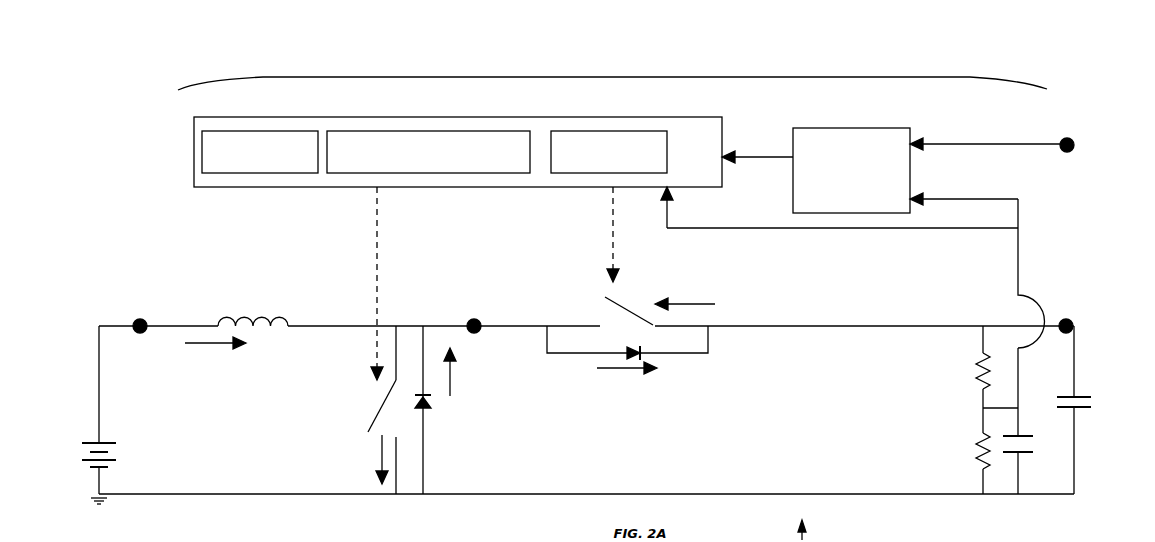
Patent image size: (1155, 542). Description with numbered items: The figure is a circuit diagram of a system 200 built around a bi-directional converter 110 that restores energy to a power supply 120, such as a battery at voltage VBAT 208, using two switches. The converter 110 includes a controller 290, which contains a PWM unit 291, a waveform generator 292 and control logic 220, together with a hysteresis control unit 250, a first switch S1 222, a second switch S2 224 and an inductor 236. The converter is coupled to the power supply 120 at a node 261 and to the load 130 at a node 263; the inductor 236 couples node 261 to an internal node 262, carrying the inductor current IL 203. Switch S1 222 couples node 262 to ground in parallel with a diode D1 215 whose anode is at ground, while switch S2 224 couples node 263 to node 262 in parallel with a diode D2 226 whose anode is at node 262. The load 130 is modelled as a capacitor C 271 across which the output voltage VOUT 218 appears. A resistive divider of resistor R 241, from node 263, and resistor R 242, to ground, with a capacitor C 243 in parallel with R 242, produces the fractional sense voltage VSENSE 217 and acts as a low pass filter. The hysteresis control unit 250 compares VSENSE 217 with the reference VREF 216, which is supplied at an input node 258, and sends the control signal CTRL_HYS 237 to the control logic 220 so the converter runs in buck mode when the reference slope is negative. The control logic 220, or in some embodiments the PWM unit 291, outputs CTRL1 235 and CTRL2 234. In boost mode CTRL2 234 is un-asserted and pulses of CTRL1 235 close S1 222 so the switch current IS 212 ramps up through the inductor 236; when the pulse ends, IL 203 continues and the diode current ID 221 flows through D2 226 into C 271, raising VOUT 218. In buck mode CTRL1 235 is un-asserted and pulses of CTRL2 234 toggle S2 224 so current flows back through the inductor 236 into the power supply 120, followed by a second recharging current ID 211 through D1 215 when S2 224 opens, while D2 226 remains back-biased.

The system 200 is at (158, 56).
The bi-directional converter 110 is at (613, 77).
The controller 290 is at (300, 216).
The pulse width modulator (PWM) unit 291 is at (260, 152).
The waveform generator 292 is at (428, 152).
The control logic 220 is at (609, 152).
The CTRL_HYS control signal 237 is at (757, 140).
The hysteresis control unit 250 is at (851, 170).
The VREF reference signal 216 is at (988, 128).
The node 258 is at (1068, 139).
The VSENSE signal 217 is at (862, 267).
The CTRL2 control signal 234 is at (592, 234).
The CTRL1 control signal 235 is at (356, 290).
The power supply 120 is at (73, 415).
The VBAT 208 is at (89, 304).
The node 261 is at (144, 320).
The inductor 236 is at (253, 300).
The IL inductor current 203 is at (215, 361).
The first switch S1 222 is at (541, 379).
The IS switch current 212 is at (365, 461).
The diode D1 215 is at (443, 410).
The ID diode current 211 is at (473, 373).
The node 262 is at (478, 319).
The second switch S2 224 is at (615, 302).
The diode D2 226 is at (627, 363).
The ID diode current 221 is at (627, 388).
The resistor R 241 is at (964, 379).
The resistor R 242 is at (978, 451).
The capacitor C 243 is at (1031, 421).
The node 263 is at (1066, 319).
The VOUT load voltage 218 is at (1112, 331).
The capacitor C 271 is at (1088, 410).
The load 130 is at (1108, 462).